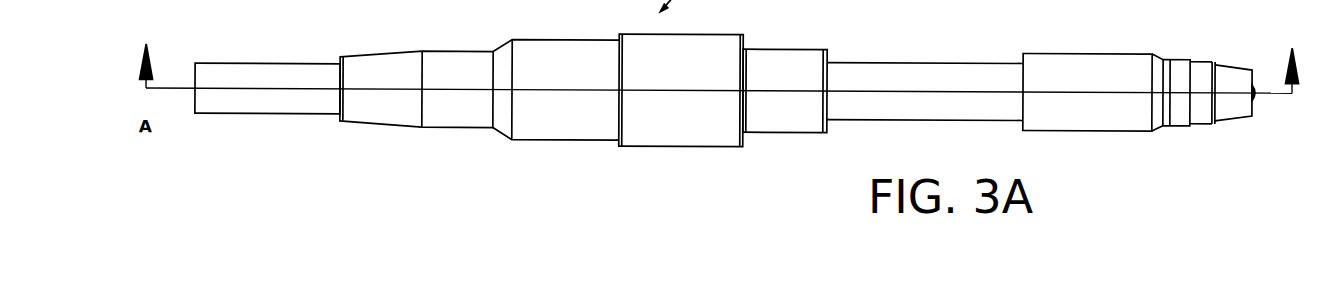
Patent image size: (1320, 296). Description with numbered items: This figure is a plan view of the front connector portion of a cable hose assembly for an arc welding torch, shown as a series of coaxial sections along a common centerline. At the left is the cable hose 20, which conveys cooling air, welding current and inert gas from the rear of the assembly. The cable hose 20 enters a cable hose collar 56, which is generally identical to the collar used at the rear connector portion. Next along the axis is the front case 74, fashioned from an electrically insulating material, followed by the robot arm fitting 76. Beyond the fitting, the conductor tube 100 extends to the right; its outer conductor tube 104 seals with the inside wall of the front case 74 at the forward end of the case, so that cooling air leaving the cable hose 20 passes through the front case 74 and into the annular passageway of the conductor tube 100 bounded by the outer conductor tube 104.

The cable hose 20 is at (263, 86).
The cable hose collar 56 is at (478, 82).
The front case 74 is at (581, 82).
The robot arm fitting 76 is at (709, 82).
The outer conductor tube 104 is at (903, 71).
The conductor tube 100 is at (1002, 50).